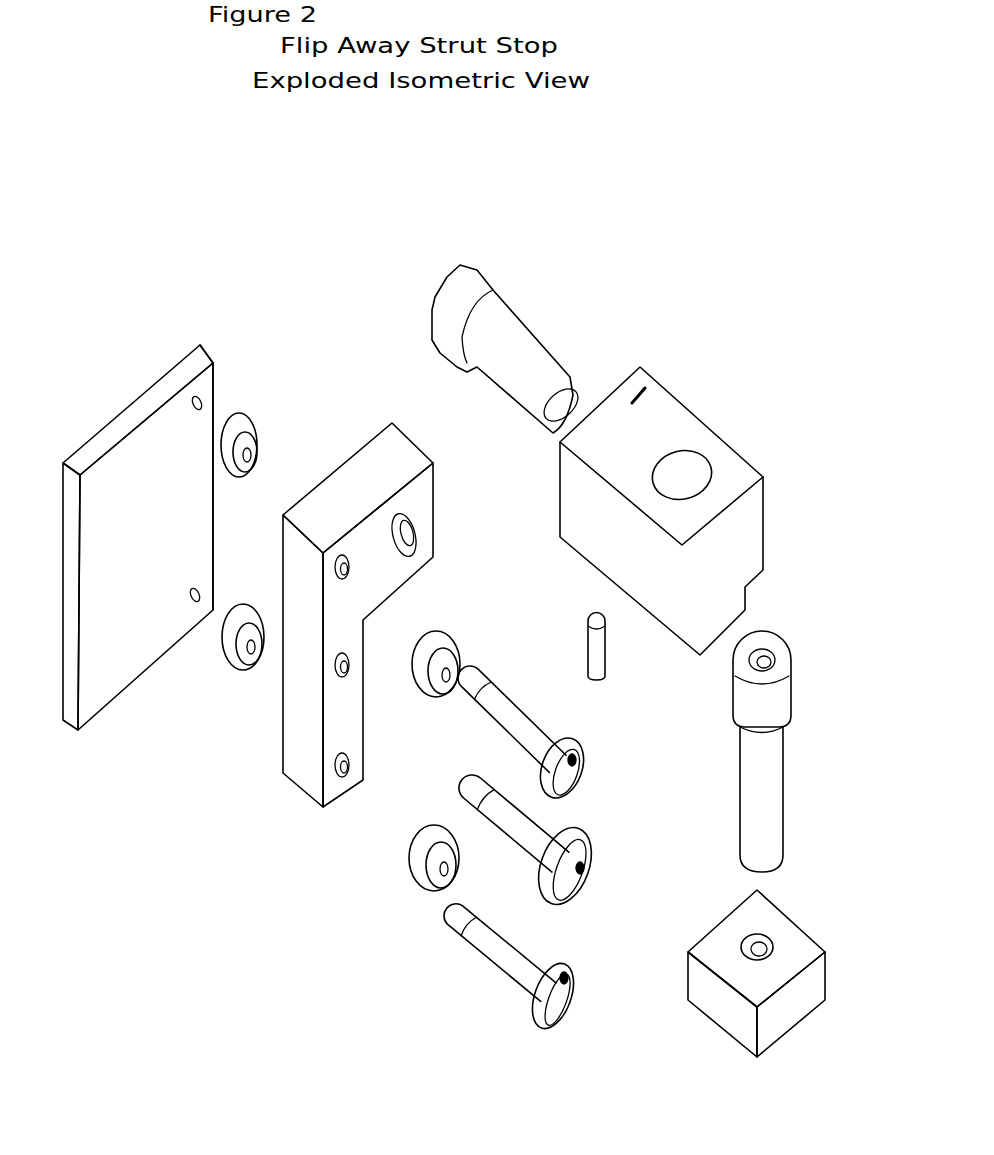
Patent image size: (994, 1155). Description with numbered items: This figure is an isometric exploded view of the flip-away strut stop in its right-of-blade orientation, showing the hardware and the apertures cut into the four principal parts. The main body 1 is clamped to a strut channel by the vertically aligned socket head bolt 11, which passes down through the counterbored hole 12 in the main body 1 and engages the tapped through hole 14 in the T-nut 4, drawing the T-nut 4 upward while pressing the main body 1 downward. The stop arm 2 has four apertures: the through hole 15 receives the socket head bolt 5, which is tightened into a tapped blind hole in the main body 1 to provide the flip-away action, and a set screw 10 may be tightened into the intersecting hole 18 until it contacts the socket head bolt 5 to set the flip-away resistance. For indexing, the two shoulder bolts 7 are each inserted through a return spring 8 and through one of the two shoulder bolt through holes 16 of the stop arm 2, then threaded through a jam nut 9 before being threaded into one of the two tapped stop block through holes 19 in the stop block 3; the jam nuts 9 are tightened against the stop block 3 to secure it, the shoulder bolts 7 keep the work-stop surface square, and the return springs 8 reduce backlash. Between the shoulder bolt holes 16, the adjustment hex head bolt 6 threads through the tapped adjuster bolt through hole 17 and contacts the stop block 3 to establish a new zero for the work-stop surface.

The main body 1 is at (640, 395).
The stop arm 2 is at (287, 723).
The stop block 3 is at (103, 665).
The T-nut 4 is at (723, 1007).
The ½-13 × 1½" socket head bolt 5 is at (453, 297).
The ⅜-16 × 1½" adjustment hex head bolt 6 is at (582, 862).
The 5/16 × 1¼" shoulder bolt 7 is at (577, 763).
The return springs 8 is at (443, 637).
The jam nut 9 is at (250, 407).
The 10-32 ½" long set screw 10 is at (595, 680).
The ½-13 × 1½" socket head bolt 11 is at (783, 720).
The ½" hole counter bored for a ½-13 socket head bolt 12 is at (682, 477).
The .4375" outer diameter T-nut through hole tapped ½-13 14 is at (757, 942).
The .5" outer diameter through hole 15 is at (405, 525).
The .3125" outer diameter shoulder bolt through hole 16 is at (347, 568).
The .3230" outer diameter adjuster bolt through hole tapped at ⅜-16 17 is at (352, 678).
The .1719" outer diameter set screw intersecting hole 18 is at (217, 357).
The .2031" outer diameter stop block through hole tapped at ¼-20 19 is at (213, 530).